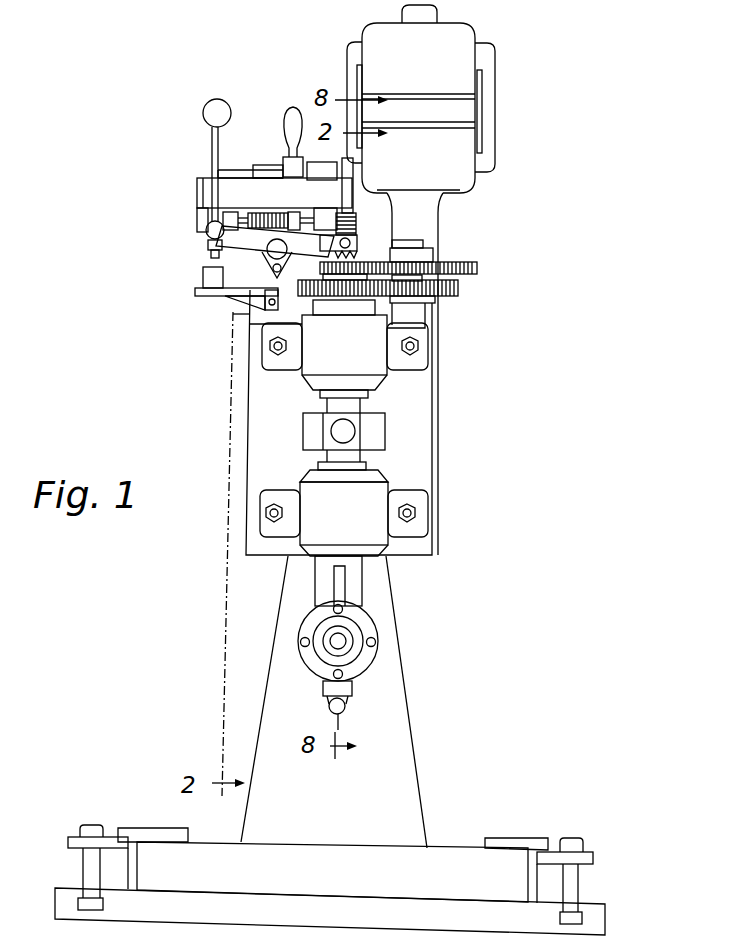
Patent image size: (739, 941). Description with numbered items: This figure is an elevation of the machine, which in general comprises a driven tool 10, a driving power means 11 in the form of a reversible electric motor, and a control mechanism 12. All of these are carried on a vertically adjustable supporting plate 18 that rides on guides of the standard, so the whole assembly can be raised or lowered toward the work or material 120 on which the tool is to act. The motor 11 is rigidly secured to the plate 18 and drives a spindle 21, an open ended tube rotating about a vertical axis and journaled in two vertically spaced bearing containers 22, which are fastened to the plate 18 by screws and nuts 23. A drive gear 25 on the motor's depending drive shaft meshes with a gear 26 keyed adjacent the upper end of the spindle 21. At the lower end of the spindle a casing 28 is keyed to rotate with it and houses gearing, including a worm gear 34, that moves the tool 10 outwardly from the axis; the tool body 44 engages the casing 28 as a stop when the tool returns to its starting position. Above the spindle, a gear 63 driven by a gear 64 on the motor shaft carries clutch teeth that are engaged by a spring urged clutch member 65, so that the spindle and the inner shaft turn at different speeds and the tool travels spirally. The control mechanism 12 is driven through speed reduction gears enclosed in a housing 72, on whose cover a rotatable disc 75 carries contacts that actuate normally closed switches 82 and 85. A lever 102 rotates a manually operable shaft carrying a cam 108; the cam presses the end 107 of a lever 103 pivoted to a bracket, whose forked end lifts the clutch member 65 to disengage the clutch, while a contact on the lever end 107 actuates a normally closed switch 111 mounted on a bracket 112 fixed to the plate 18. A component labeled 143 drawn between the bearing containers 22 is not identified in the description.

The driven tool 10 is at (320, 703).
The driving power means 11 is at (472, 26).
The control mechanism 12 is at (240, 160).
The supporting plate 18 is at (432, 456).
The spindle 21 is at (362, 403).
The bearing containers 22 is at (358, 360).
The screws and nuts 23 is at (270, 346).
The drive gear 25 is at (460, 290).
The gear 26 is at (333, 299).
The casing 28 is at (313, 598).
The worm gear 34 is at (340, 641).
The tool body 44 is at (350, 691).
The gear 63 is at (360, 262).
The gear 64 is at (470, 263).
The clutch member 65 is at (354, 256).
The housing 72 is at (196, 196).
The disc 75 is at (230, 171).
The switch 82 is at (286, 180).
The switch 85 is at (321, 181).
The lever 102 is at (210, 129).
The lever 103 is at (262, 241).
The lever end 107 is at (206, 243).
The cam 108 is at (281, 123).
The switch 111 is at (203, 280).
The bracket 112 is at (241, 300).
The work or material 120 is at (452, 856).
The bearing block 143 is at (354, 426).